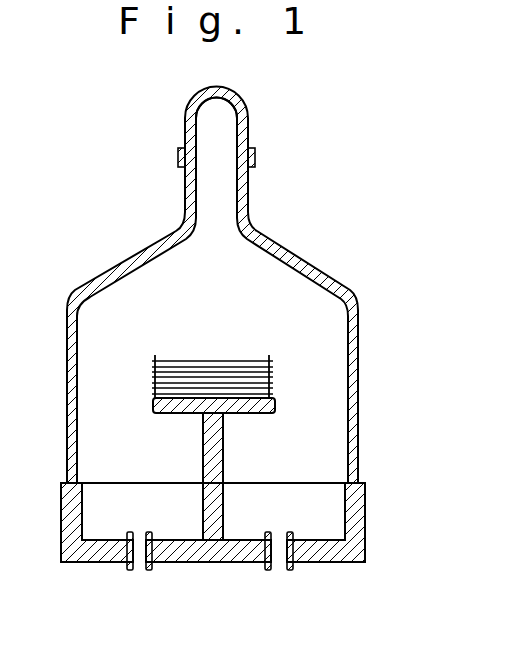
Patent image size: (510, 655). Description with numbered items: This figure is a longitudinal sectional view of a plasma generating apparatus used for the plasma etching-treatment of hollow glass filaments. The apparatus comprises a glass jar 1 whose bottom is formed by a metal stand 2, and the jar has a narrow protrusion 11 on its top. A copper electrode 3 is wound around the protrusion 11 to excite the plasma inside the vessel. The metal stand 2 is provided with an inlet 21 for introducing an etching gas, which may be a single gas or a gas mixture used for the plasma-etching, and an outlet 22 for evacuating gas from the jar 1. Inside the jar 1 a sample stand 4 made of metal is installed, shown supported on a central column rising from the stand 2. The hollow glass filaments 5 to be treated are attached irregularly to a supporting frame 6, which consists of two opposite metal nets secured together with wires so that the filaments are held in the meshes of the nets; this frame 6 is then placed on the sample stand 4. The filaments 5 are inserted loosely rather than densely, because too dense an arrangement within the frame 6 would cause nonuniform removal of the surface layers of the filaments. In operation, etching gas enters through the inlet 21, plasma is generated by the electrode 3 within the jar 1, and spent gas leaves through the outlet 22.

The glass jar 1 is at (358, 352).
The protrusion 11 is at (185, 130).
The copper electrode 3 is at (256, 157).
The hollow glass filaments 5 is at (228, 360).
The supporting frame 6 is at (269, 356).
The sample stand 4 is at (276, 405).
The metal stand 2 is at (366, 517).
The inlet 21 is at (152, 566).
The outlet 22 is at (266, 566).